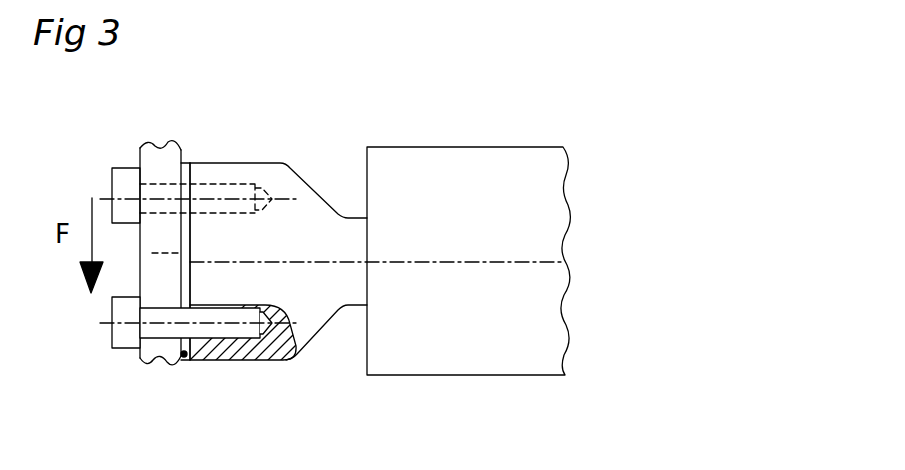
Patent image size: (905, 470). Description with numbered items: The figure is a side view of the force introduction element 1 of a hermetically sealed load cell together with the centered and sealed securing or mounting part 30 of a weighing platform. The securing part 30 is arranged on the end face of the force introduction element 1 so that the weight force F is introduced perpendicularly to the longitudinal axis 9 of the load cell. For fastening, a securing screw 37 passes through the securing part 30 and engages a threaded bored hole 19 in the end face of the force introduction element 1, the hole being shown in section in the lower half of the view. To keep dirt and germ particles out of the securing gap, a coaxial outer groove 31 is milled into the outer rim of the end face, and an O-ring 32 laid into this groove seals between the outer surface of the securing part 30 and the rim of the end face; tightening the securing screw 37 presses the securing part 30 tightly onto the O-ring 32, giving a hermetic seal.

The force introduction element 1 is at (300, 285).
The longitudinal axis 9 is at (435, 262).
The threaded bored hole 19 is at (237, 343).
The securing or mounting part 30 is at (150, 363).
The coaxial outer groove 31 is at (184, 165).
The O-ring 32 is at (181, 353).
The securing screw 37 is at (110, 348).